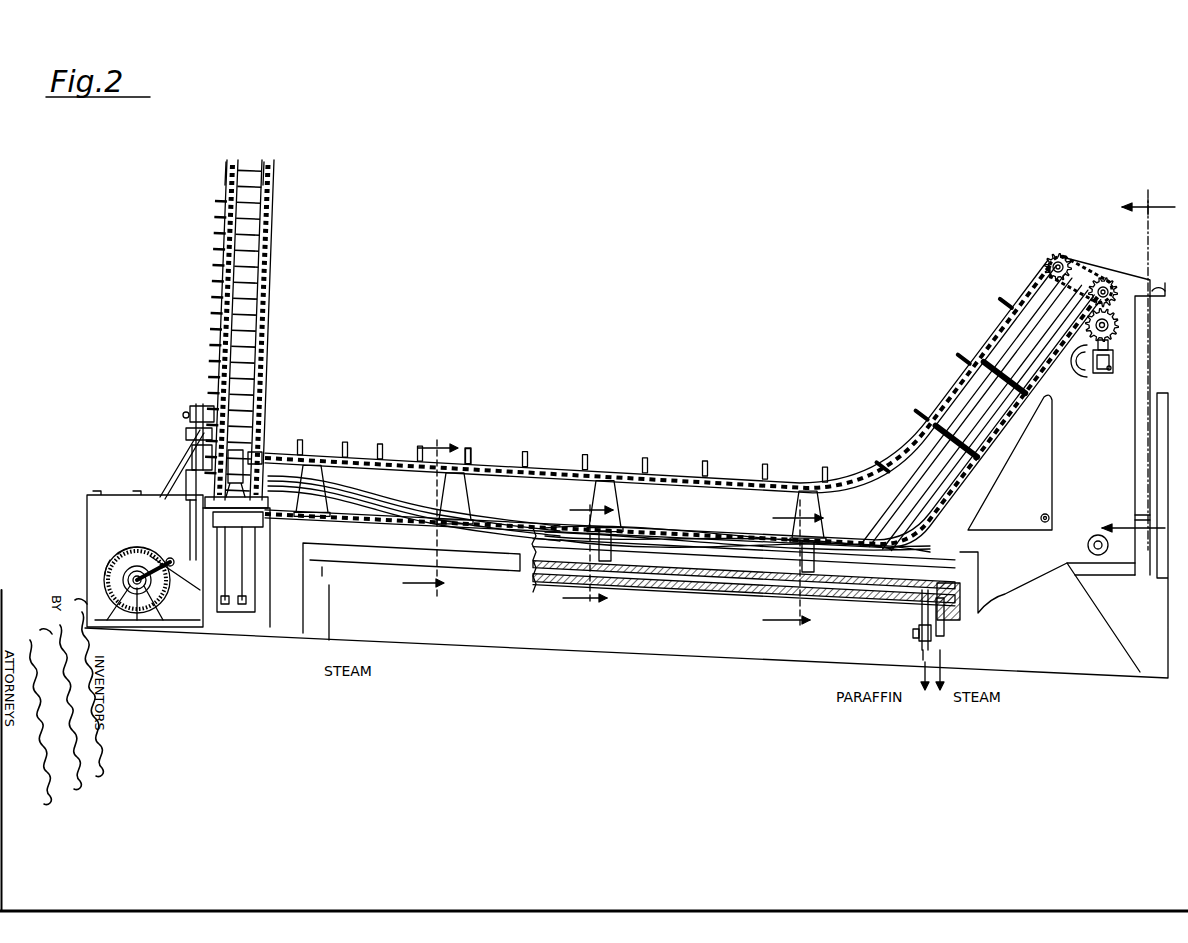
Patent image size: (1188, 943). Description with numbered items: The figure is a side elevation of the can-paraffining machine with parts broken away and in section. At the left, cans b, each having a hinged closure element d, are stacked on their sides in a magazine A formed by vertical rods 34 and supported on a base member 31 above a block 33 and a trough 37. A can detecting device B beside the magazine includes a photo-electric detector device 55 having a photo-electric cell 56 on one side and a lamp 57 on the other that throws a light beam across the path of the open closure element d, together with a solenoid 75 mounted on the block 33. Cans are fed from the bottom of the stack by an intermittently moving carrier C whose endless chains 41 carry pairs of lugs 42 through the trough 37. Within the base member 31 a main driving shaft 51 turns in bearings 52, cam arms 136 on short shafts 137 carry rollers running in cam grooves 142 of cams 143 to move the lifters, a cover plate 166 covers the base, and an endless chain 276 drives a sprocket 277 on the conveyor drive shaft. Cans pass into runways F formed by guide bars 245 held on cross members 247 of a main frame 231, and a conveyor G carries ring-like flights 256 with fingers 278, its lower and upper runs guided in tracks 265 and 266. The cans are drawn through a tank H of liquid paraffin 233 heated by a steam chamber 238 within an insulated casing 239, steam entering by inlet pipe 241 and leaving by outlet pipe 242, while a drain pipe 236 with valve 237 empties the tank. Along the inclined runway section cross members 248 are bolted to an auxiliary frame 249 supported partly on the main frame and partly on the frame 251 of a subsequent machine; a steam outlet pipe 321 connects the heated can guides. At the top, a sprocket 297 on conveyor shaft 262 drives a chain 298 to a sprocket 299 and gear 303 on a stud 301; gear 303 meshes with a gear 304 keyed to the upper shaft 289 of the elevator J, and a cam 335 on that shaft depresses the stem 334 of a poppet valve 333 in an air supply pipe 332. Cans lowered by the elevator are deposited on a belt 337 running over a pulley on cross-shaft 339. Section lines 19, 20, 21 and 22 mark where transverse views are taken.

The magazine A is at (252, 186).
The rods 34 is at (266, 193).
The hinged closure element d is at (222, 212).
The can b is at (258, 225).
The photo-electric cell 56 is at (206, 408).
The photo-electric detector device 55 is at (188, 414).
The light source or lamp 57 is at (200, 462).
The solenoid 75 is at (252, 450).
The can detecting device B is at (246, 460).
The endless chain 276 is at (162, 494).
The sprocket 277 is at (190, 482).
The cover plate 166 is at (100, 496).
The base member 31 is at (95, 513).
The main driving shaft 51 is at (132, 588).
The bearings 52 is at (142, 592).
The cam arm 136 is at (150, 560).
The short shaft 137 is at (176, 572).
The cam 143 is at (123, 554).
The cam groove 142 is at (112, 563).
The block 33 is at (247, 548).
The endless chains 41 is at (244, 580).
The lugs 42 is at (246, 602).
The trough or can guide 37 is at (224, 558).
The can carrier C is at (229, 612).
The ring-like flight 256 is at (893, 528).
The cross members 248 is at (950, 424).
The track 266 is at (345, 455).
The finger 278 is at (493, 448).
The cross members 247 is at (560, 518).
The track 265 is at (393, 492).
The conveyor G is at (381, 476).
The runways F is at (673, 600).
The guide bars 245 is at (708, 545).
The reservoir or tank H is at (650, 586).
The heat insulated casing 239 is at (700, 598).
The liquid paraffin 233 is at (828, 600).
The steam chamber 238 is at (846, 610).
The main frame 231 is at (500, 560).
The inlet pipe 241 is at (330, 568).
The drain pipe 236 is at (919, 627).
The valve 237 is at (916, 640).
The outlet pipe 242 is at (946, 633).
The sprocket 297 is at (1058, 255).
The conveyor shaft 262 is at (1046, 261).
The stud 301 is at (1117, 293).
The endless chain 298 is at (1092, 268).
The sprocket 299 is at (1100, 284).
The gear 303 is at (1135, 276).
The gear 304 is at (1119, 327).
The cam 335 is at (1090, 320).
The upper shaft 289 is at (1072, 356).
The spring held stem 334 is at (1108, 346).
The air supply pipe 332 is at (1101, 374).
The poppet valve 333 is at (1112, 369).
The auxiliary frame 249 is at (1041, 462).
The steam outlet pipe 321 is at (1041, 517).
The endless belt 337 is at (1135, 514).
The cross-shaft 339 is at (1088, 548).
The frame 251 is at (1103, 617).
The elevator device J is at (1085, 625).
The section line 19 is at (428, 516).
The section line 20 is at (566, 556).
The section line 21 is at (775, 562).
The section line 22 is at (1117, 367).